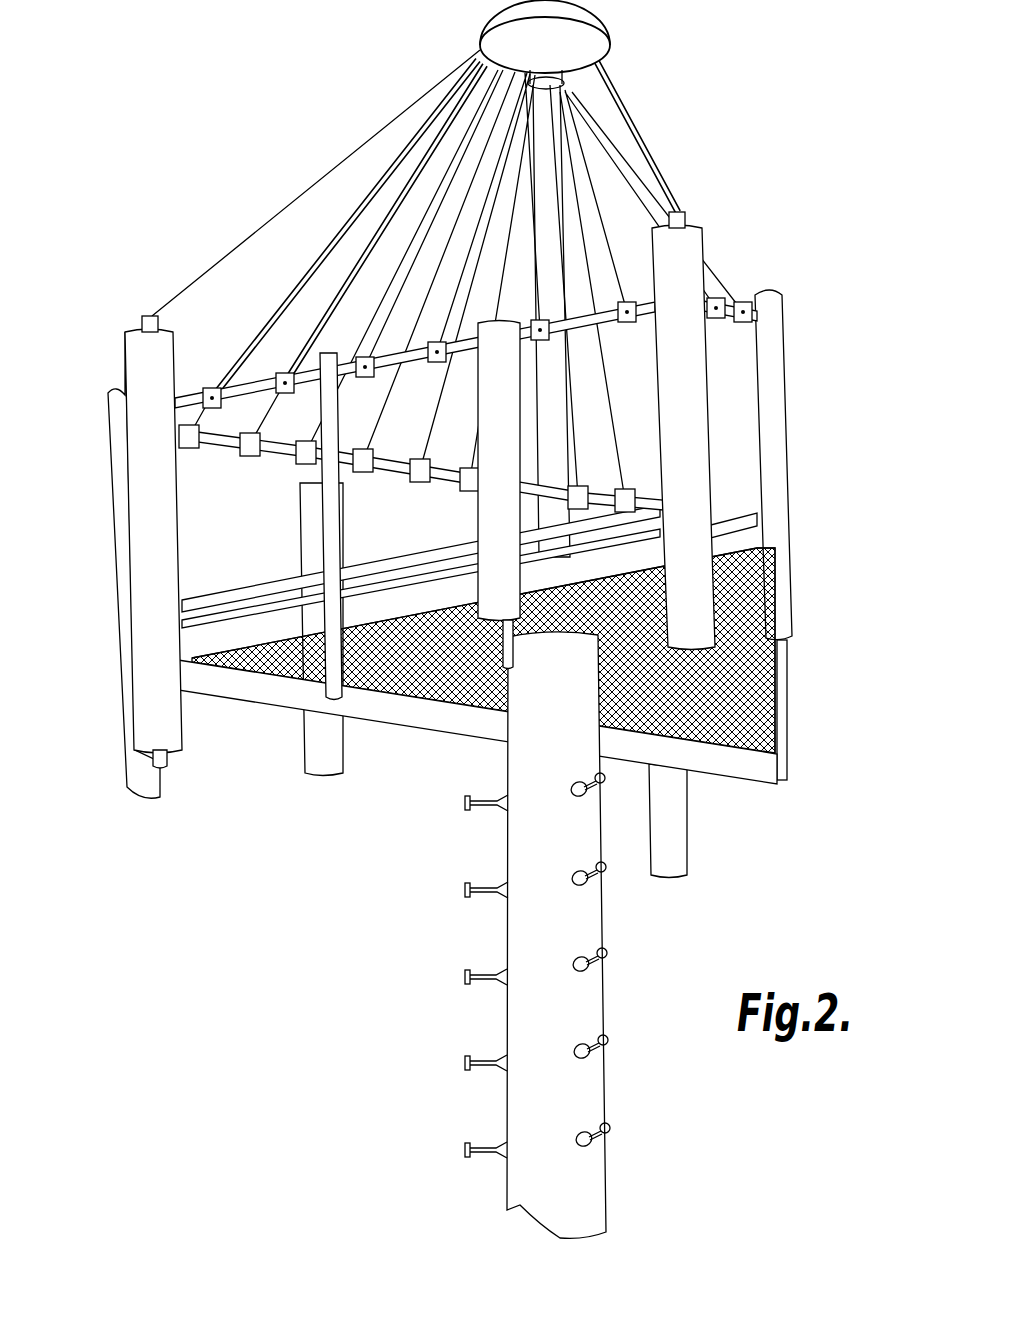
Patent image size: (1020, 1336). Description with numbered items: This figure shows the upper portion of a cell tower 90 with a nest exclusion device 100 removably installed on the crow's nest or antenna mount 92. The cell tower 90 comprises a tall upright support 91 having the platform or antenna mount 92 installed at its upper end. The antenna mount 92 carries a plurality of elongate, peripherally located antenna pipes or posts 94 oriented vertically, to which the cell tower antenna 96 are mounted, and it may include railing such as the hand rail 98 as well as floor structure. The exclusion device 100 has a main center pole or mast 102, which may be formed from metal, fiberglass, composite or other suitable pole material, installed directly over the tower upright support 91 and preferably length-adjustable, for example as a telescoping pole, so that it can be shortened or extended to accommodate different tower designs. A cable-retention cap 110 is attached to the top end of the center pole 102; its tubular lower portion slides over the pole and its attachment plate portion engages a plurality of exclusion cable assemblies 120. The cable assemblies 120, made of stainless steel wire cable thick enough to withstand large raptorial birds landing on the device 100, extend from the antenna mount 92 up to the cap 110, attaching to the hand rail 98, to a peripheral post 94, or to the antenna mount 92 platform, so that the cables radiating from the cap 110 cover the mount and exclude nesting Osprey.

The cell tower 90 is at (330, 964).
The upright support 91 is at (508, 1030).
The antenna mount 92 is at (270, 708).
The antenna post 94 is at (327, 346).
The cell tower antenna 96 is at (125, 352).
The hand rail 98 is at (188, 380).
The nest exclusion device 100 is at (638, 72).
The center pole 102 is at (556, 416).
The cable-retention cap 110 is at (487, 42).
The cable assembly 120 is at (289, 308).